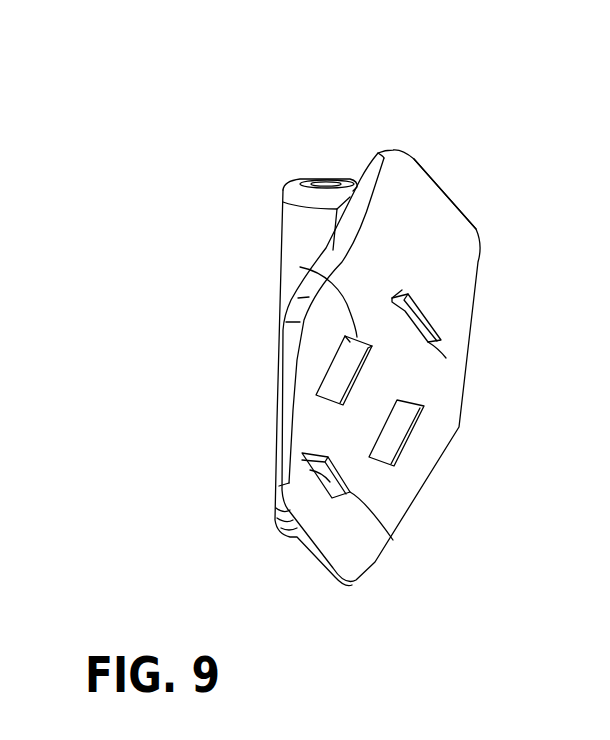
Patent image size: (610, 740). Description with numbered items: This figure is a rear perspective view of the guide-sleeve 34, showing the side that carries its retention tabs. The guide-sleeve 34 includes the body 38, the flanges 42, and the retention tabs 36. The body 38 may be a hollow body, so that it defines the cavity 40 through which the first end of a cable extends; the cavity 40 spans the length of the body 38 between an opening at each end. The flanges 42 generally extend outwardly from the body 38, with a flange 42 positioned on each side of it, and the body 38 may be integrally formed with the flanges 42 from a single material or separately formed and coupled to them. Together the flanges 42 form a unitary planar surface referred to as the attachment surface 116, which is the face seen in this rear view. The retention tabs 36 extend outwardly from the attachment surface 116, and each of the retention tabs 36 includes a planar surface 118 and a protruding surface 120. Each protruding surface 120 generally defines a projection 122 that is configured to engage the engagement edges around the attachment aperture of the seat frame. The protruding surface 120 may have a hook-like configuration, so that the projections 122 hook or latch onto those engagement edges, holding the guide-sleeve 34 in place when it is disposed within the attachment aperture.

The guide-sleeve 34 is at (423, 160).
The retention tabs 36 is at (433, 320).
The body 38 is at (285, 212).
The cavity 40 is at (338, 181).
The flanges 42 is at (420, 229).
The attachment surface 116 is at (389, 212).
The planar surface 118 is at (428, 343).
The protruding surface 120 is at (300, 267).
The projection 122 is at (402, 290).